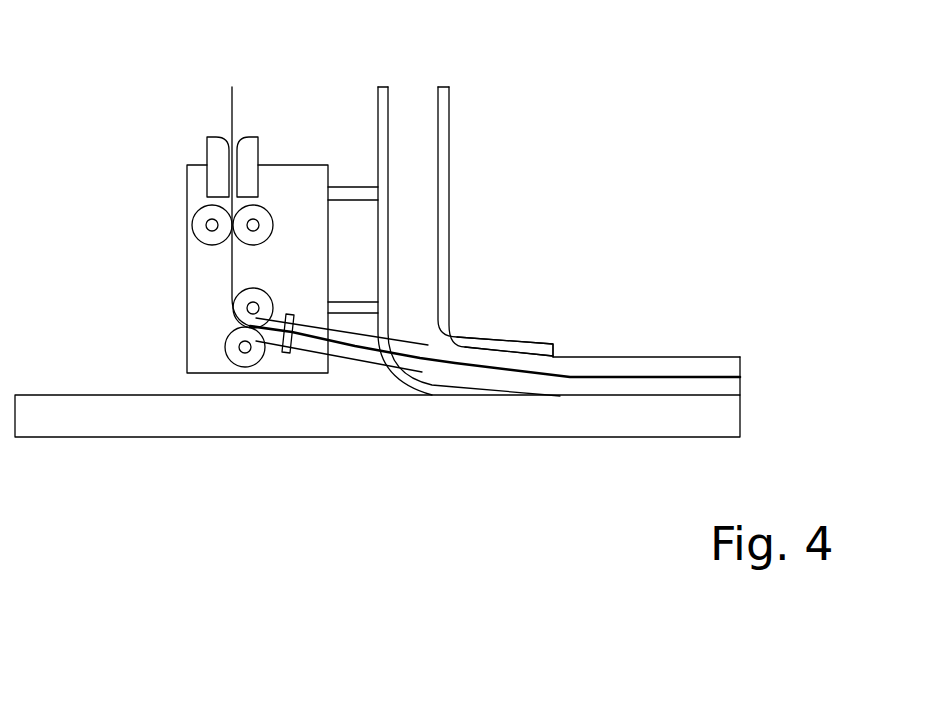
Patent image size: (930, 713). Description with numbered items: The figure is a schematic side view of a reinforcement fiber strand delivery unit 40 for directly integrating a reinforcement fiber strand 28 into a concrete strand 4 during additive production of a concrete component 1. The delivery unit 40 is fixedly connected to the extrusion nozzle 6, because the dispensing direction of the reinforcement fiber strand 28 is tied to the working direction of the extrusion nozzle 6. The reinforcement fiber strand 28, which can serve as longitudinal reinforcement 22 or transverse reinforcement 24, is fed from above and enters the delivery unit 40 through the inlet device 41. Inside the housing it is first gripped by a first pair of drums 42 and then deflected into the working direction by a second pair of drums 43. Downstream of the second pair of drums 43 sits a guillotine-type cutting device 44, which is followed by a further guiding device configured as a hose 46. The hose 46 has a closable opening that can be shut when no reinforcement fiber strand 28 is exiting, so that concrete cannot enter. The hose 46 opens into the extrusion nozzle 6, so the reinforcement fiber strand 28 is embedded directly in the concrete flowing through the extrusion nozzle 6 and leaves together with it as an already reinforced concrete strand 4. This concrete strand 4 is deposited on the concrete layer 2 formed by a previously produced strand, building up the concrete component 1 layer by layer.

The concrete component 1 is at (750, 385).
The concrete layer 2 is at (740, 415).
The concrete strand 4 is at (413, 98).
The extrusion nozzle 6 is at (512, 342).
The longitudinal reinforcement 22 is at (487, 192).
The transverse reinforcement 24 is at (486, 192).
The reinforcement fiber strand 28 is at (640, 374).
The reinforcement fiber strand delivery unit 40 is at (162, 161).
The inlet device 41 is at (208, 140).
The first pair of drums 42 is at (190, 233).
The second pair of drums 43 is at (227, 352).
The guillotine-type cutting device 44 is at (289, 338).
The hose 46 is at (359, 365).